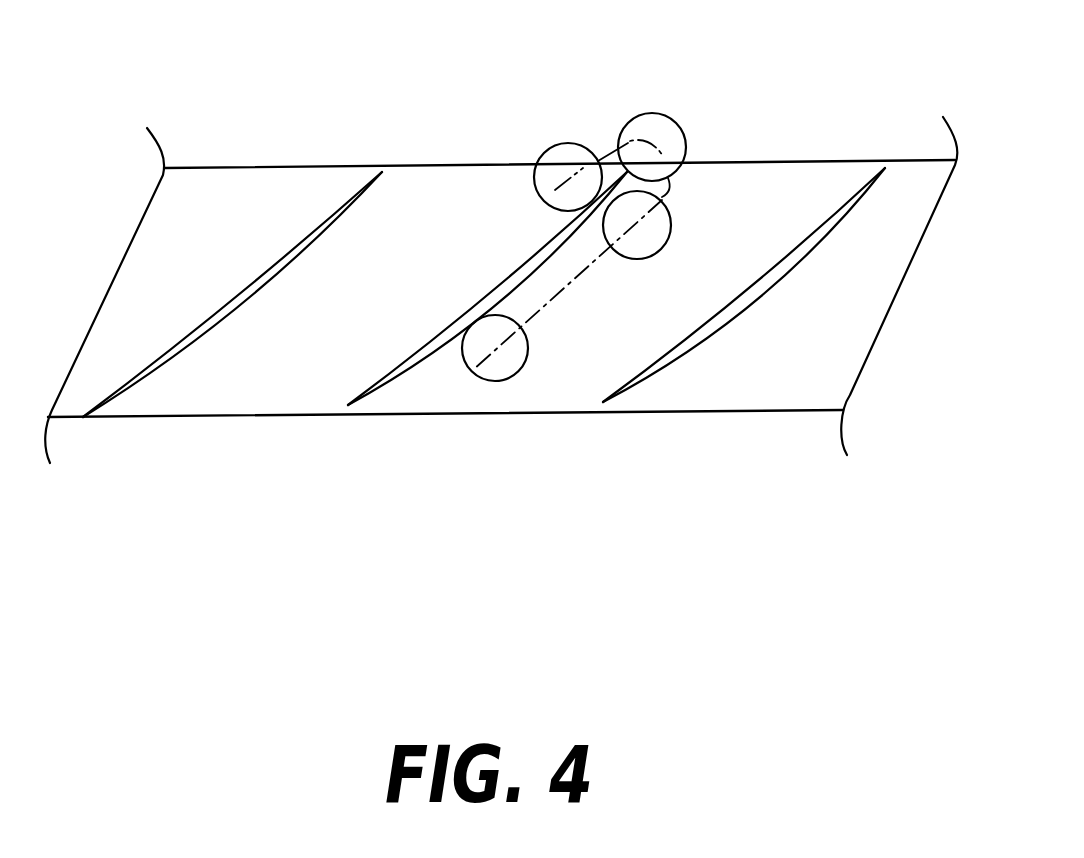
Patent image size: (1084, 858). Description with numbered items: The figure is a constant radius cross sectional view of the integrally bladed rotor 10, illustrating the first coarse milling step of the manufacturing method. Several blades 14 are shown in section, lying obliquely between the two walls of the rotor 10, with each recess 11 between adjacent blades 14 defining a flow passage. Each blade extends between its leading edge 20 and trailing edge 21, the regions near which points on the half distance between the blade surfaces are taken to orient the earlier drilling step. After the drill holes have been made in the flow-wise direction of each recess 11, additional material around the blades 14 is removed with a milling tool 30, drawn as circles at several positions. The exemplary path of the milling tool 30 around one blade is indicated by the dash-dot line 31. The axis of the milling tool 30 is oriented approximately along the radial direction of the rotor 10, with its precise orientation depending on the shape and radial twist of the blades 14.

The integrally bladed rotor 10 is at (407, 527).
The recess 11 is at (437, 199).
The blade 14 is at (268, 278).
The leading edge 20 is at (78, 417).
The trailing edge 21 is at (387, 165).
The milling tool 30 is at (565, 152).
The line 31 is at (592, 272).